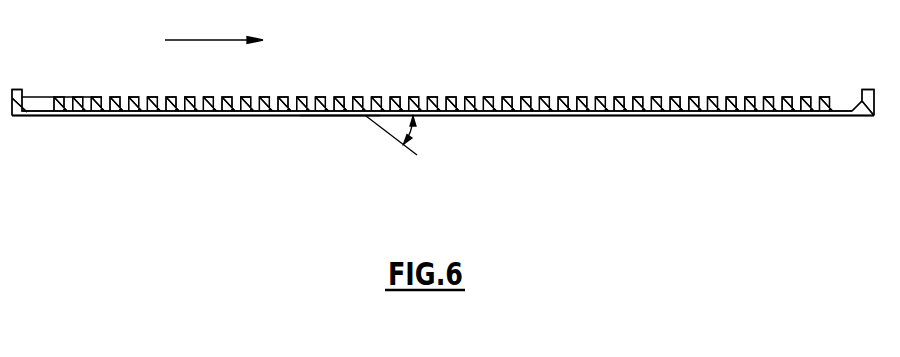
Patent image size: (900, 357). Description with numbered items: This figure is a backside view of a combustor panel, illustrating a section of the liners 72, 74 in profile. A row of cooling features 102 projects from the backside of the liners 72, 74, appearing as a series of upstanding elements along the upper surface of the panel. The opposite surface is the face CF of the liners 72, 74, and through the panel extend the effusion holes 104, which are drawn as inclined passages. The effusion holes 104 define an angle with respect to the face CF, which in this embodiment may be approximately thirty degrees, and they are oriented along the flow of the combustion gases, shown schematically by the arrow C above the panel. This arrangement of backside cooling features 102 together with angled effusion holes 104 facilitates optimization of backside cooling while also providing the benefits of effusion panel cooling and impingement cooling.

The liner 72 is at (771, 135).
The liner 74 is at (771, 135).
The cooling features 102 is at (639, 97).
The effusion holes 104 is at (642, 116).
The face CF is at (339, 116).
The arrow C is at (214, 27).